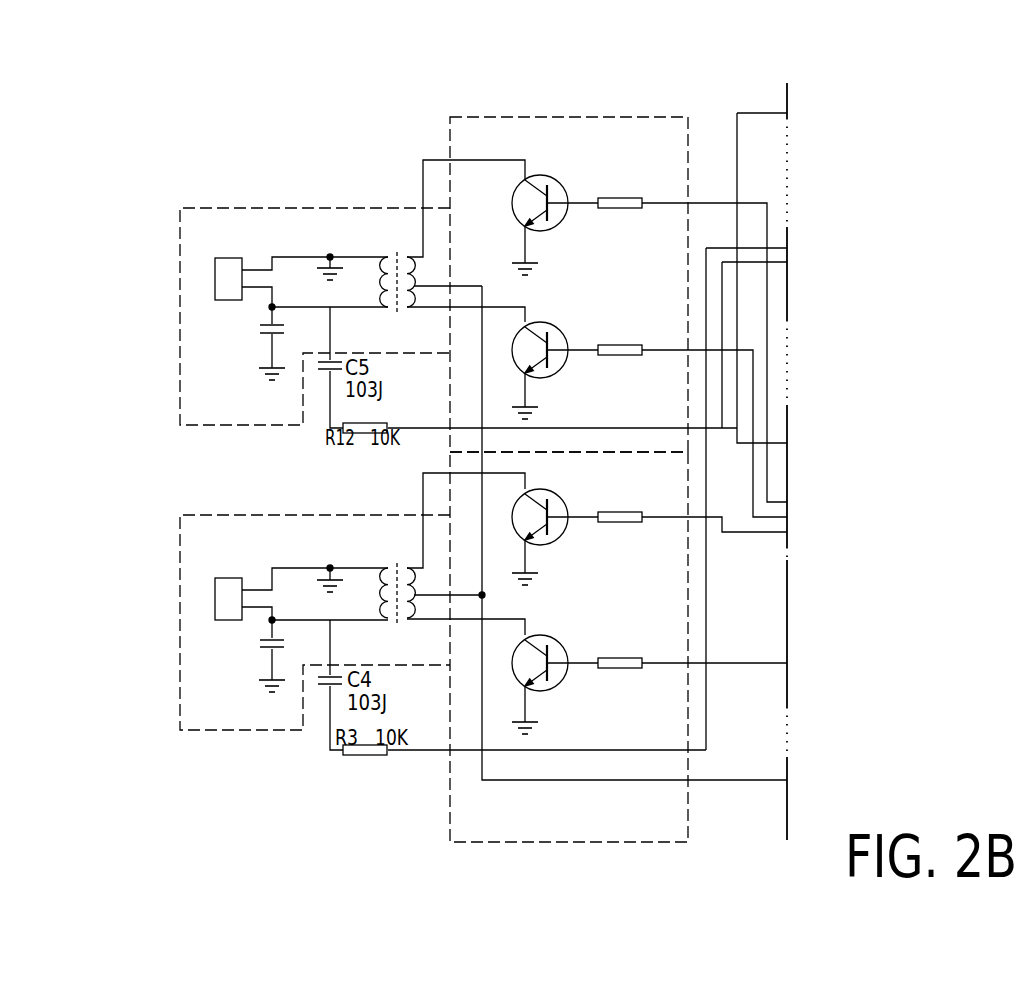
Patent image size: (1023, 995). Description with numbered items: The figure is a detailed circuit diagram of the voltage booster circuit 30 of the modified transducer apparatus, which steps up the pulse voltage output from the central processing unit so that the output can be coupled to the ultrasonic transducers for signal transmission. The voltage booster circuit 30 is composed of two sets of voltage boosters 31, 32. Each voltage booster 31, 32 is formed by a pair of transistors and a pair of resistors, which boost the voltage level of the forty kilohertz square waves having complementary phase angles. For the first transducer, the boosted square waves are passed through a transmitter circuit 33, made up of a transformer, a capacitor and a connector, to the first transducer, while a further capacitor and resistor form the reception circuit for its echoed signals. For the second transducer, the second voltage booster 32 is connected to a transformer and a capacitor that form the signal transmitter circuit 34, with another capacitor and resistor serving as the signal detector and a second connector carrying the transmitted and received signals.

The voltage booster circuit 30 is at (546, 72).
The voltage booster 31 is at (613, 147).
The voltage booster 32 is at (583, 825).
The transmitter circuit 33 is at (291, 233).
The signal transmitter circuit 34 is at (252, 712).